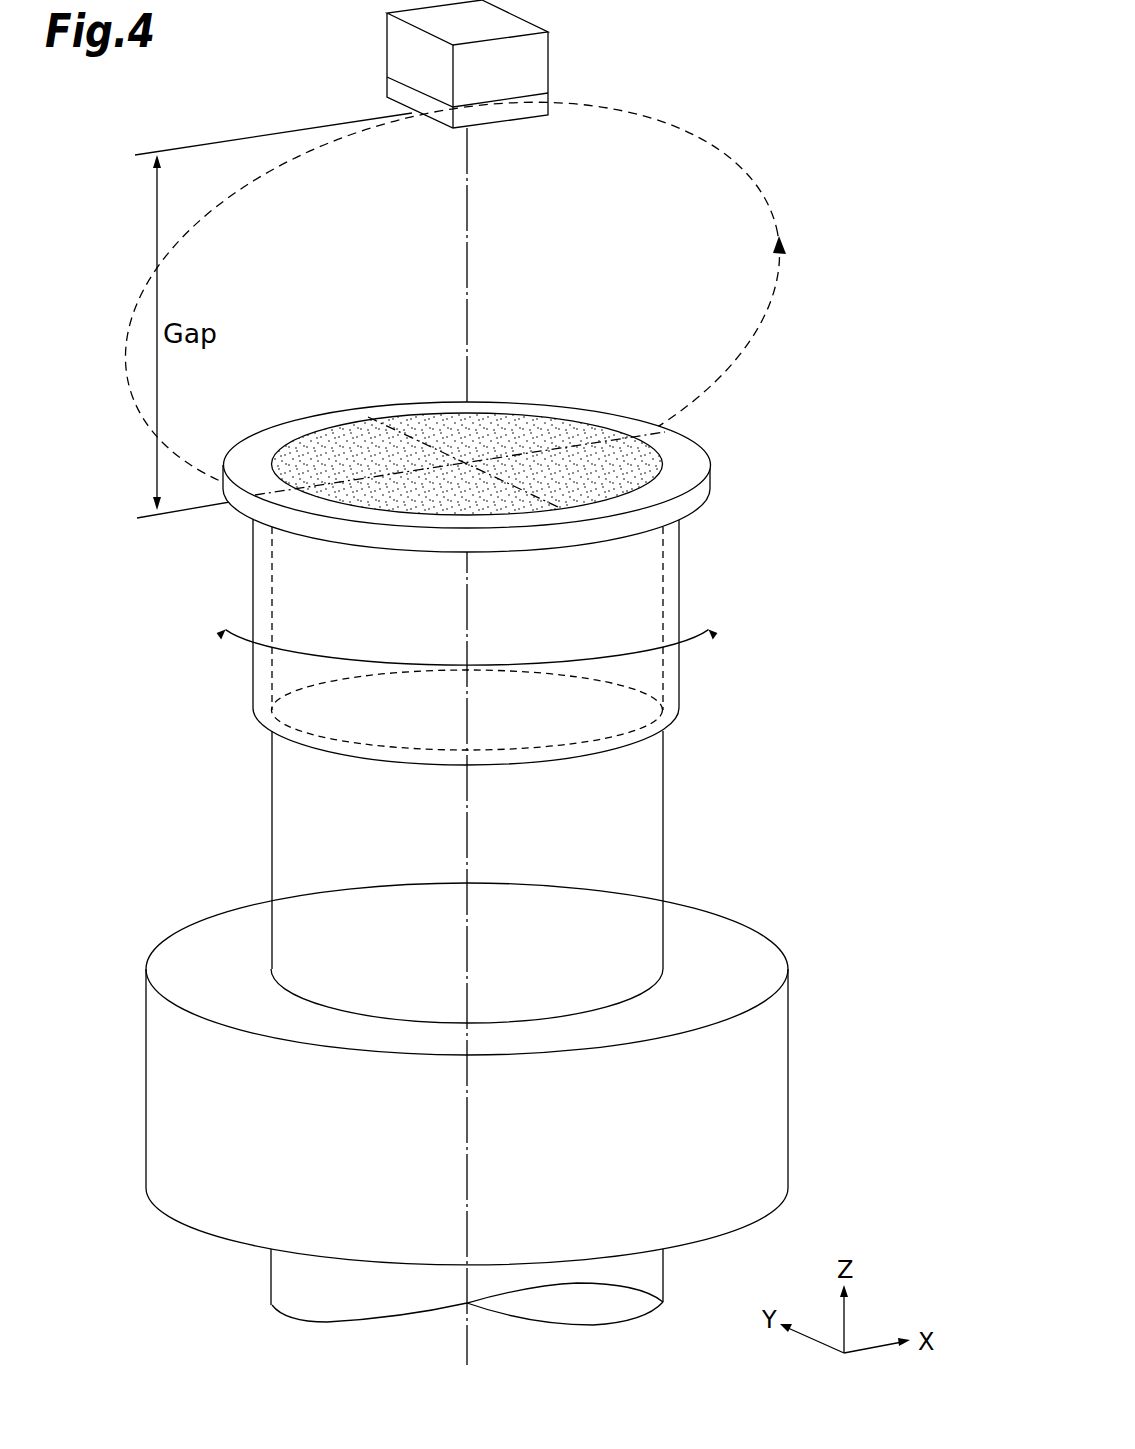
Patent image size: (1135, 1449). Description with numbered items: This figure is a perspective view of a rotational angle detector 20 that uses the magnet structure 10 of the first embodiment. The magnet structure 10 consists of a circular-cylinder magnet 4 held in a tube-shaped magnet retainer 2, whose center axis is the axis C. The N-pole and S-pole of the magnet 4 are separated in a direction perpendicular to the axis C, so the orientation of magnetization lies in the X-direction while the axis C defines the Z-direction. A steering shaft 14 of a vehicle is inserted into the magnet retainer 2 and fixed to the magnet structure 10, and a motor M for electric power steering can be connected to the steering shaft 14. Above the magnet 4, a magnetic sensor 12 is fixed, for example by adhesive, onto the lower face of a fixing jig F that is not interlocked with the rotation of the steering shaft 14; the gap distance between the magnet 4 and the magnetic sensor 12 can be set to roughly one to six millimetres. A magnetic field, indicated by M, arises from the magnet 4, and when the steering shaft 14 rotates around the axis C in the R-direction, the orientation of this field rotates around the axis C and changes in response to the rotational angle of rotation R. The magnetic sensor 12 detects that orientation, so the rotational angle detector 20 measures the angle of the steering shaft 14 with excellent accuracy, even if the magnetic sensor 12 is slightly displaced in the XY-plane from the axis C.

The magnet retainer 2 is at (677, 583).
The magnet 4 is at (640, 483).
The magnet structure 10 is at (512, 583).
The magnetic sensor 12 is at (503, 110).
The steering shaft 14 is at (638, 798).
The rotational angle detector 20 is at (796, 112).
The fixing jig F is at (502, 91).
The motor / magnetic field M is at (790, 262).
The rotation R is at (718, 647).
The axis C is at (467, 1352).